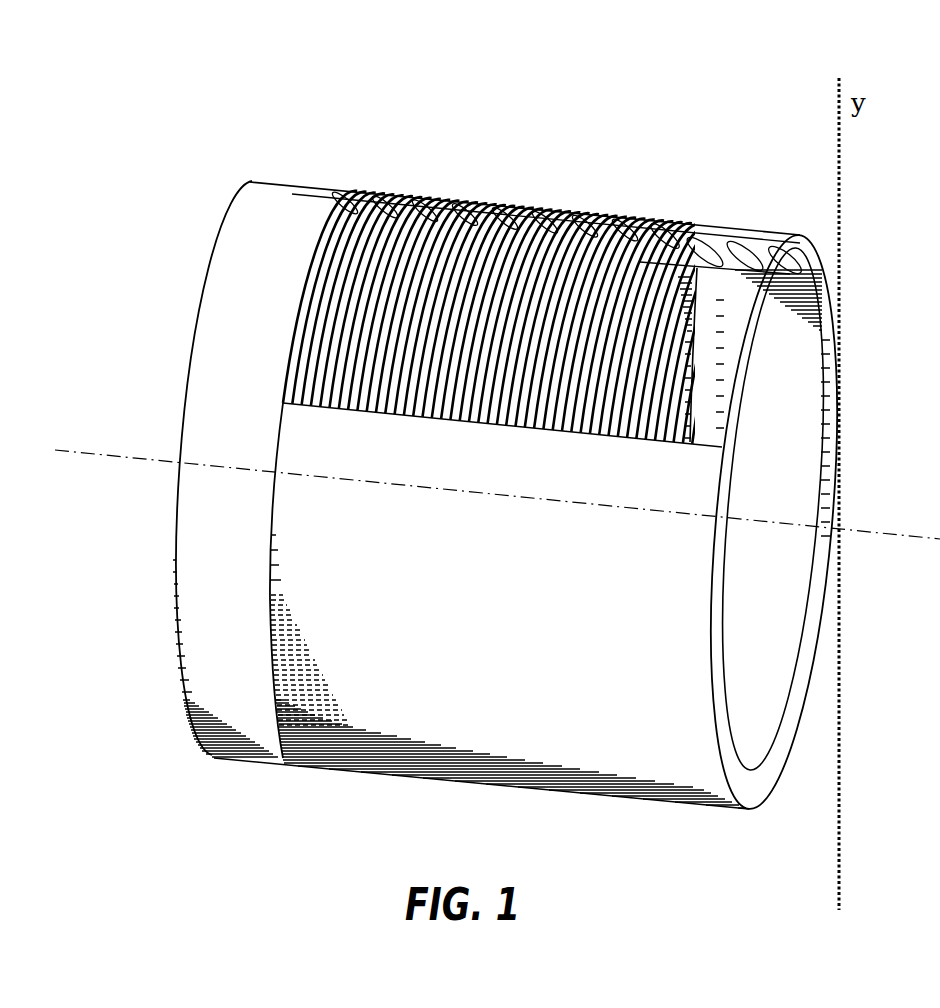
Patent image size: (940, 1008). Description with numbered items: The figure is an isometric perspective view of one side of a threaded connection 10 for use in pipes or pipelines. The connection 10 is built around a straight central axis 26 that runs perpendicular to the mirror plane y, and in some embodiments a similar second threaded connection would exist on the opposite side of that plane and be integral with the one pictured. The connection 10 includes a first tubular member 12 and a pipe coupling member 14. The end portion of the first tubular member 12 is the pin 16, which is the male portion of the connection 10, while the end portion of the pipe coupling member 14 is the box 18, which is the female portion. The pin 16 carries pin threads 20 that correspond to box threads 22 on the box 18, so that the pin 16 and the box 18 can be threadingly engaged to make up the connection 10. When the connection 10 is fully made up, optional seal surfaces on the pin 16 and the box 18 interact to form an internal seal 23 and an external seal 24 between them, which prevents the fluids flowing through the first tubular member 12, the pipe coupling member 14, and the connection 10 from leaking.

The threaded connection 10 is at (748, 58).
The first tubular member 12 is at (186, 404).
The pipe coupling member 14 is at (790, 730).
The pin 16 is at (460, 228).
The box 18 is at (622, 216).
The pin threads 20 is at (388, 213).
The box threads 22 is at (560, 232).
The internal seal 23 is at (688, 262).
The external seal 24 is at (300, 212).
The central axis 26 is at (888, 530).